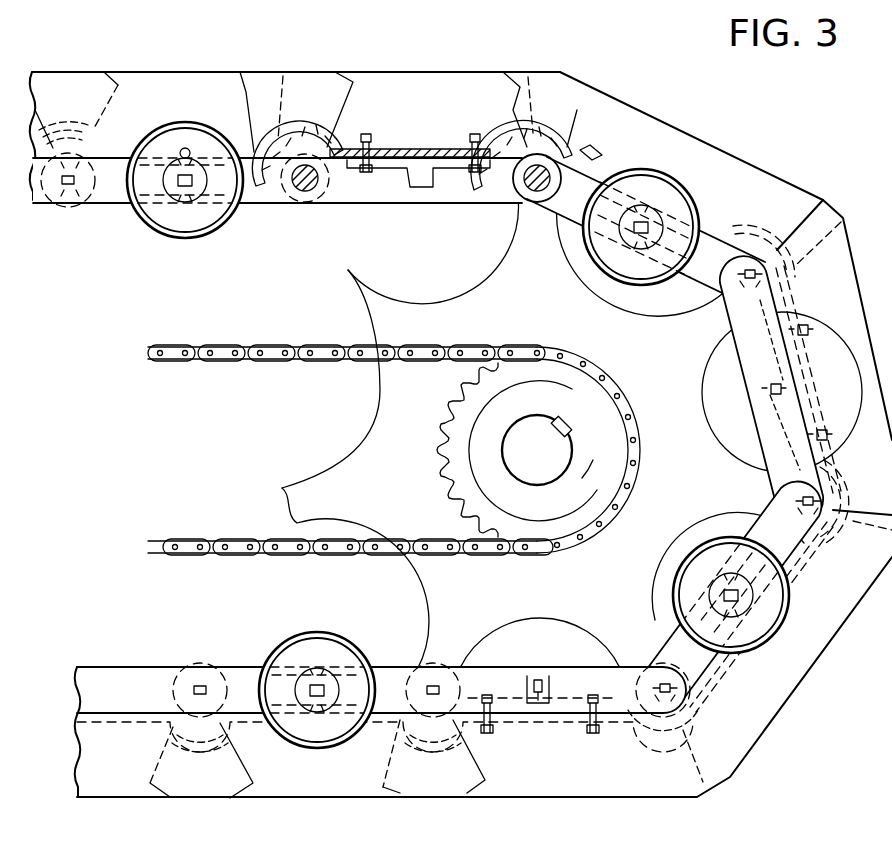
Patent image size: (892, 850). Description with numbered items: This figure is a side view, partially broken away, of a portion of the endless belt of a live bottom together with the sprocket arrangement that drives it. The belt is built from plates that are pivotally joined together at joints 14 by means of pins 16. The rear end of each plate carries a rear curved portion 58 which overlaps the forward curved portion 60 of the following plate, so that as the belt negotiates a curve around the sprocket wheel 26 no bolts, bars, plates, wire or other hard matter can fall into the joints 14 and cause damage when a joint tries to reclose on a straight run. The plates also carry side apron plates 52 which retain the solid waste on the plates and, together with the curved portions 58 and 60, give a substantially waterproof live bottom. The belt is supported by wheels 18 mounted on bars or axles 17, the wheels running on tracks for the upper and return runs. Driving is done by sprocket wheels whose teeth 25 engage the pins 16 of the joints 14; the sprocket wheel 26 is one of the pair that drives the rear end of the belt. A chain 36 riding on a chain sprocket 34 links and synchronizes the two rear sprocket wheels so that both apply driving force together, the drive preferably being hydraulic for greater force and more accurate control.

The joint 14 is at (273, 225).
The pin 16 is at (302, 192).
The bar or axle 17 is at (306, 668).
The wheel 18 is at (157, 232).
The tooth of sprocket wheel 25 is at (352, 300).
The sprocket wheel 26 is at (348, 425).
The chain sprocket 34 is at (446, 489).
The chain 36 is at (197, 540).
The side apron plate 52 is at (130, 800).
The rear curved portion 58 is at (280, 140).
The forward curved portion 60 is at (330, 147).